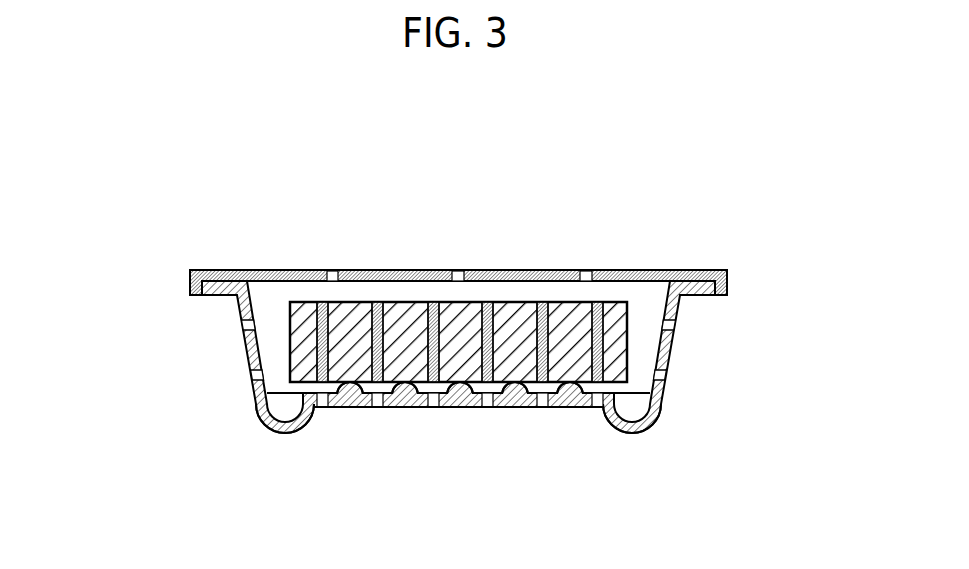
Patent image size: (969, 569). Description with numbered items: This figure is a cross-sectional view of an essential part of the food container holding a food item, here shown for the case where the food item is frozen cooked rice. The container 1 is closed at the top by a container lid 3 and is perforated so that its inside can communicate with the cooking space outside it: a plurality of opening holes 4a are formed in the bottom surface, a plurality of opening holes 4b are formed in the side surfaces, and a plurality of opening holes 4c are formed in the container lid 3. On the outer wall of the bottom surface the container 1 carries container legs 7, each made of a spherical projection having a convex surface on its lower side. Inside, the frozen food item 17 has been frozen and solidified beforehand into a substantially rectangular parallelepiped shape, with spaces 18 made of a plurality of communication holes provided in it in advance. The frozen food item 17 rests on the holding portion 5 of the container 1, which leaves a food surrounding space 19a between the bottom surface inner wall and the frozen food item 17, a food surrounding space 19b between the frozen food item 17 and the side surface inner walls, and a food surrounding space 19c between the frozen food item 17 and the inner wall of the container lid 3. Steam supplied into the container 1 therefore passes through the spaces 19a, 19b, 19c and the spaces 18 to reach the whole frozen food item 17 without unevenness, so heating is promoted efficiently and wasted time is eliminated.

The container 1 is at (192, 248).
The container lid 3 is at (487, 271).
The opening holes 4a is at (374, 404).
The opening holes 4b is at (243, 324).
The opening holes 4c is at (587, 271).
The holding portion 5 is at (343, 400).
The container legs 7 is at (288, 433).
The frozen food item 17 is at (518, 323).
The spaces 18 is at (377, 330).
The food surrounding space 19a is at (547, 385).
The food surrounding space 19b is at (273, 340).
The food surrounding space 19c is at (345, 293).